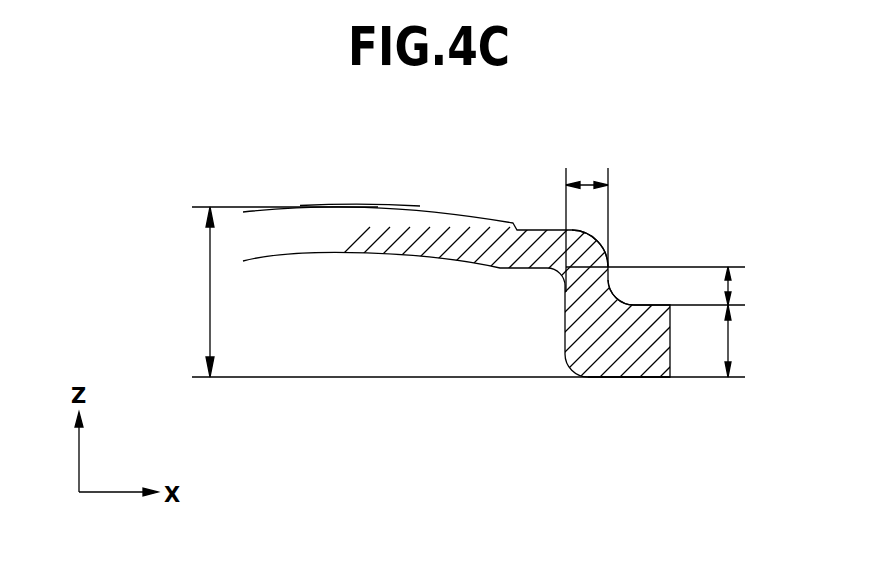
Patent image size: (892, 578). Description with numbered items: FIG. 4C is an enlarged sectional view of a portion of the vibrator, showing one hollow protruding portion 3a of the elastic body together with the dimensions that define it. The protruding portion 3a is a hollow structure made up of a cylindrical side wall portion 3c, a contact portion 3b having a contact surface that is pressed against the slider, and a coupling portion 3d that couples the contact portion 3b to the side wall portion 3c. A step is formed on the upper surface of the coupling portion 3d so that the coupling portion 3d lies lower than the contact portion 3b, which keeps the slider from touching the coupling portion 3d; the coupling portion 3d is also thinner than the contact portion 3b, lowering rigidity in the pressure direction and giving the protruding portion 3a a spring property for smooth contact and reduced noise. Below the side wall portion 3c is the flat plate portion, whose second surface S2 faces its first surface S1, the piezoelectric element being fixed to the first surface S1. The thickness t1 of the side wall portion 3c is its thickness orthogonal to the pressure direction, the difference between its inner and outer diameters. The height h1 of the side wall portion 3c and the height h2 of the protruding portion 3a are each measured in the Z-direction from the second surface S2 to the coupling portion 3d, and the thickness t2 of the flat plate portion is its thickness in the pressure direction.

The protruding portion 3a is at (437, 177).
The contact portion 3b is at (363, 207).
The side wall portion 3c is at (608, 278).
The coupling portion 3d is at (540, 230).
The first surface S1 is at (630, 378).
The second surface S2 is at (665, 305).
The height of the side wall portion h1 is at (743, 286).
The height of the protruding portion h2 is at (192, 292).
The thickness of the side wall portion t1 is at (587, 171).
The thickness of the flat plate portion t2 is at (742, 341).